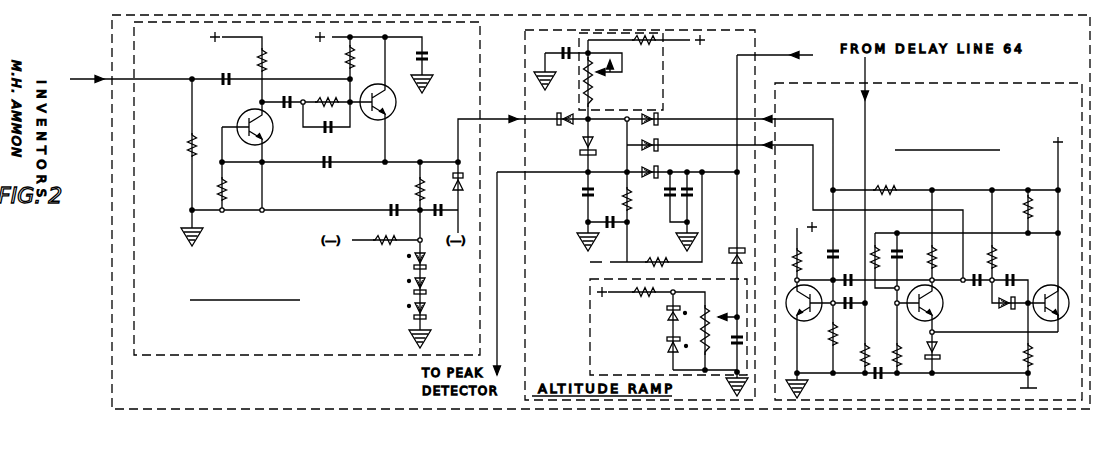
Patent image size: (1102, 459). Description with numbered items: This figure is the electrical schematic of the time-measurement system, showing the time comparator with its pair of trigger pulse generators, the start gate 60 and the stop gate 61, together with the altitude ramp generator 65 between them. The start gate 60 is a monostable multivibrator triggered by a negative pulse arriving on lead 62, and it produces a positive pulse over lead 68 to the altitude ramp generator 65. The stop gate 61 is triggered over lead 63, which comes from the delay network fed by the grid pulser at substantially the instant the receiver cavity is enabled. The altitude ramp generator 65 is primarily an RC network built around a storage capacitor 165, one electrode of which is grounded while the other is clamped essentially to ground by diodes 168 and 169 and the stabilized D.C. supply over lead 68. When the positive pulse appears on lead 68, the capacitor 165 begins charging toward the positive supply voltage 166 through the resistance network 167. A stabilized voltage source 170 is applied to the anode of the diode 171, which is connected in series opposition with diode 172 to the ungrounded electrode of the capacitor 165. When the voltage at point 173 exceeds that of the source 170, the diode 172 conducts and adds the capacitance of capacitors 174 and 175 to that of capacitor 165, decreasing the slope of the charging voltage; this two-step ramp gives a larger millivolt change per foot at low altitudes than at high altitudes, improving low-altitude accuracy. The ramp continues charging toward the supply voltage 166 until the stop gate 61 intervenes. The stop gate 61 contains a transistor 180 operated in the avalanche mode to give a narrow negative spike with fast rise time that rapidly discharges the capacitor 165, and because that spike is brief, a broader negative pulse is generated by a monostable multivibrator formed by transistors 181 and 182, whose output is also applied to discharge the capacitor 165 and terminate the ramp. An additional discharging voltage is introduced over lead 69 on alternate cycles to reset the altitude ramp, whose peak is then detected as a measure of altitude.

The start gate 60 is at (267, 357).
The stop gate 61 is at (960, 83).
The lead 62 is at (95, 78).
The lead 63 is at (868, 72).
The altitude ramp generator 65 is at (523, 140).
The lead 68 is at (500, 118).
The lead 69 is at (768, 56).
The storage capacitor 165 is at (580, 190).
The positive supply voltage 166 is at (705, 37).
The resistance network 167 is at (662, 98).
The diode 168 is at (582, 140).
The diode 169 is at (572, 115).
The stabilized voltage source 170 is at (589, 307).
The diode 171 is at (732, 248).
The diode 172 is at (660, 172).
The point 173 is at (585, 169).
The capacitor 174 is at (670, 195).
The capacitor 175 is at (693, 197).
The transistor 180 is at (815, 318).
The transistor 181 is at (945, 297).
The transistor 182 is at (1047, 290).